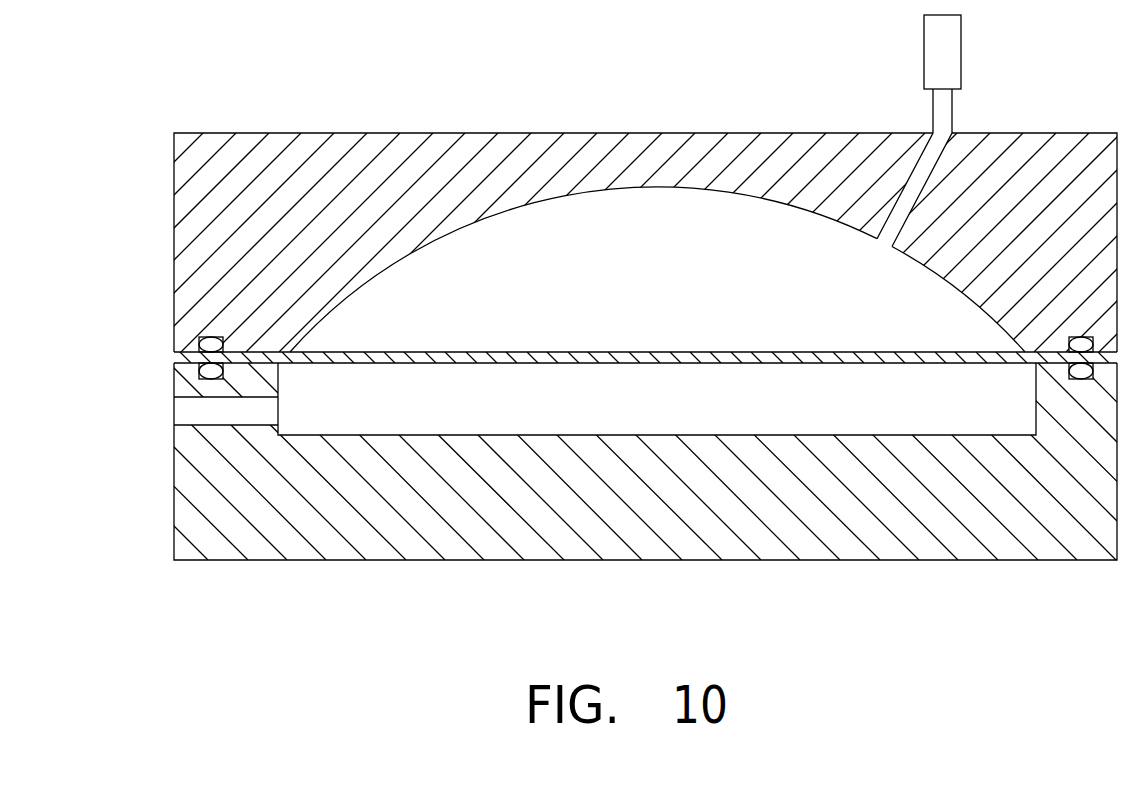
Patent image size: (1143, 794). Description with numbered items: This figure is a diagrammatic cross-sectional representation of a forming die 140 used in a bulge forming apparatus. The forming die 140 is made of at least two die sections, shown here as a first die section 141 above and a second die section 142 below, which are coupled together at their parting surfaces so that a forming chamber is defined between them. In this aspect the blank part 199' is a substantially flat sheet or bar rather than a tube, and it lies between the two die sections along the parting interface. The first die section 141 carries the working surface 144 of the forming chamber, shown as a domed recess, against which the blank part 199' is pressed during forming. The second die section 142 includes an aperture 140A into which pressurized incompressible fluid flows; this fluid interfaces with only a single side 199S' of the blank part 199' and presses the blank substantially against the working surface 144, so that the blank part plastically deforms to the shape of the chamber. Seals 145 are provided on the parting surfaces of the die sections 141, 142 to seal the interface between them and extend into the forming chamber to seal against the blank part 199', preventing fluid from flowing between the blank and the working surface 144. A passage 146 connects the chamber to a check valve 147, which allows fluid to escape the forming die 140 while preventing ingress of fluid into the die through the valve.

The forming die 140 is at (250, 133).
The first die section 141 is at (174, 248).
The second die section 142 is at (174, 498).
The working surface 144 is at (918, 263).
The seal 145 is at (212, 347).
The passage 146 is at (952, 116).
The check valve 147 is at (962, 50).
The aperture 140A is at (195, 414).
The blank part 199' is at (645, 328).
The single side of the blank part 199S' is at (645, 388).